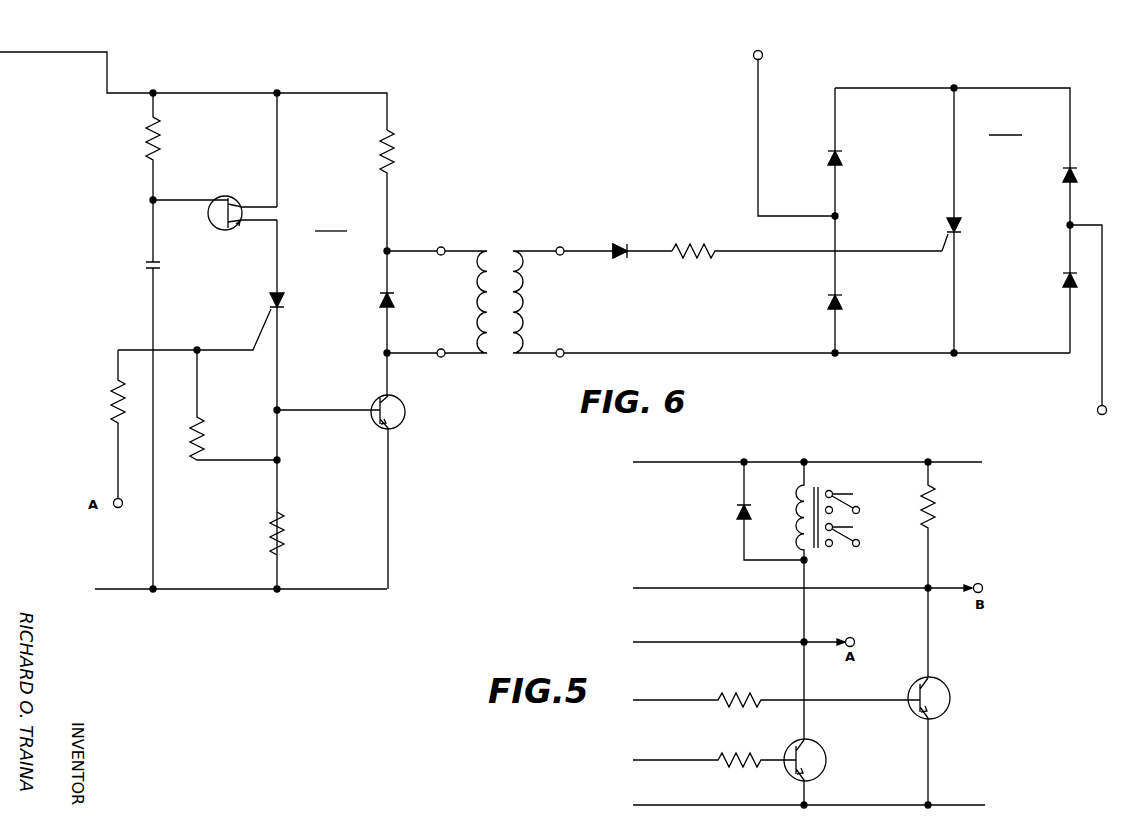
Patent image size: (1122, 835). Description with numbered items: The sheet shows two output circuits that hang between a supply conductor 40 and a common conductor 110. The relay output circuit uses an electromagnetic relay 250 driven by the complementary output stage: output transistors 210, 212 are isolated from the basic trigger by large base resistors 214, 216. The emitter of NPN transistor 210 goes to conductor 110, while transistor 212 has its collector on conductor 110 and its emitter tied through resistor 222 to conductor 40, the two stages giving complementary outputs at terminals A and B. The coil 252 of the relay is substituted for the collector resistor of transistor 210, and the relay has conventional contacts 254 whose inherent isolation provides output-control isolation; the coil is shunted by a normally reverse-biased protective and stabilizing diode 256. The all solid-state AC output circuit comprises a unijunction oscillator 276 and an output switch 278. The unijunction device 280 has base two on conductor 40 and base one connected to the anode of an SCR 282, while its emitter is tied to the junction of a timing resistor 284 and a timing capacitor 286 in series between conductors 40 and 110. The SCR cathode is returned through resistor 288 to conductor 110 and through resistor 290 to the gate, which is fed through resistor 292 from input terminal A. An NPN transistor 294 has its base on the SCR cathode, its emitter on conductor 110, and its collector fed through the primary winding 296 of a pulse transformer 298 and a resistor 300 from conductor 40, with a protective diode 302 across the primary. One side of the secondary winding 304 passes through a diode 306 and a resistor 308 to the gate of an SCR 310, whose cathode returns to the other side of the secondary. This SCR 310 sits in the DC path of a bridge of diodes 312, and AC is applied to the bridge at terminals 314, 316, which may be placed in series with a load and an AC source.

In FIG. 6, the conductor 40 is at (27, 52).
In FIG. 5, the conductor 40 is at (708, 461).
In FIG. 6, the conductor 110 is at (143, 590).
In FIG. 5, the conductor 110 is at (742, 806).
In FIG. 5, the output transistor 210 is at (827, 762).
In FIG. 5, the output transistor 212 is at (951, 700).
In FIG. 5, the base resistor 214 is at (742, 760).
In FIG. 5, the base resistor 216 is at (742, 700).
In FIG. 5, the resistor 222 is at (936, 511).
In FIG. 5, the electromagnetic relay 250 is at (831, 588).
In FIG. 5, the relay coil 252 is at (798, 510).
In FIG. 5, the relay contacts 254 is at (856, 531).
In FIG. 5, the protective and stabilizing diode 256 is at (737, 512).
In FIG. 6, the unijunction oscillator 276 is at (331, 223).
In FIG. 6, the output switch 278 is at (969, 220).
In FIG. 6, the unijunction device 280 is at (236, 196).
In FIG. 6, the SCR 282 is at (286, 303).
In FIG. 6, the timing resistor 284 is at (160, 159).
In FIG. 6, the timing capacitor 286 is at (160, 266).
In FIG. 6, the resistor 288 is at (284, 556).
In FIG. 6, the resistor 290 is at (204, 442).
In FIG. 6, the resistor 292 is at (111, 398).
In FIG. 6, the NPN transistor 294 is at (402, 425).
In FIG. 6, the primary winding 296 is at (480, 316).
In FIG. 6, the pulse transformer 298 is at (481, 279).
In FIG. 6, the resistor 300 is at (394, 168).
In FIG. 6, the protective diode 302 is at (381, 304).
In FIG. 6, the secondary winding 304 is at (520, 316).
In FIG. 6, the diode 306 is at (615, 246).
In FIG. 6, the resistor 308 is at (693, 258).
In FIG. 6, the SCR 310 is at (962, 228).
In FIG. 6, the diodes 312 is at (843, 158).
In FIG. 6, the terminal 314 is at (763, 55).
In FIG. 6, the terminal 316 is at (1096, 418).